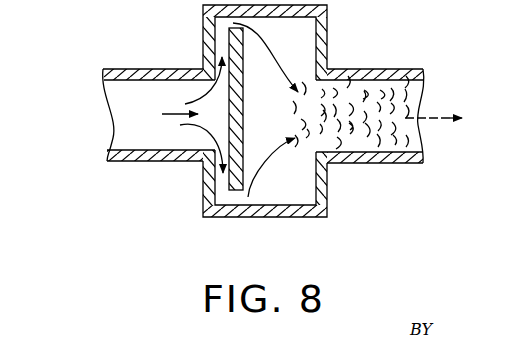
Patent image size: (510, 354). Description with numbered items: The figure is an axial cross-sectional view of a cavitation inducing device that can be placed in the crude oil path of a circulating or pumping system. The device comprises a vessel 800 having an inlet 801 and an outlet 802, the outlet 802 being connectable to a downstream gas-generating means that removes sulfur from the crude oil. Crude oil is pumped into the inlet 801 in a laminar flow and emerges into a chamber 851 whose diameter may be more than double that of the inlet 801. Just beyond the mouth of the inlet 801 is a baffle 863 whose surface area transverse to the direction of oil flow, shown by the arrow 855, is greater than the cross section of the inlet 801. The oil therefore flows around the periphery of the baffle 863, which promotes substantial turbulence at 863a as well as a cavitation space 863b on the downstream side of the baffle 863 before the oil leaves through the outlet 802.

The vessel 800 is at (328, 21).
The inlet 801 is at (128, 142).
The outlet 802 is at (427, 90).
The chamber 851 is at (311, 199).
The arrow 855 is at (176, 124).
The baffle 863 is at (233, 192).
The turbulence 863a is at (353, 76).
The cavitation space 863b is at (256, 140).